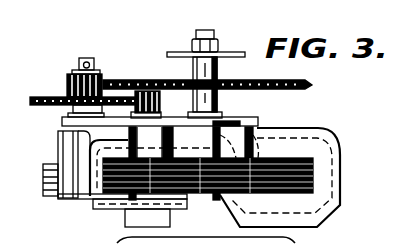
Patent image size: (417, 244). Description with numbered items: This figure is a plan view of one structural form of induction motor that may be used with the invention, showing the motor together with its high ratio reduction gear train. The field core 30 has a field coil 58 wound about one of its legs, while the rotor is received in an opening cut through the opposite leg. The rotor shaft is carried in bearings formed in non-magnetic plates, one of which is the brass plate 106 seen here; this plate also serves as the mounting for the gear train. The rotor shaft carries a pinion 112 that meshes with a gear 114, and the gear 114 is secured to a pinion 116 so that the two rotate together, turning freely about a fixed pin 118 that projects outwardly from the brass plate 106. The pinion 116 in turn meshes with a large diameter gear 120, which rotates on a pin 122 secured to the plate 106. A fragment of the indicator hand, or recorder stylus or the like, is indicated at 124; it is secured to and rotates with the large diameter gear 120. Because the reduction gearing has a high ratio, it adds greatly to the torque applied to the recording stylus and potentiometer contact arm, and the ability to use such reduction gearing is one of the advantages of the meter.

The field core 30 is at (312, 158).
The field coil 58 is at (322, 193).
The brass plate 106 is at (237, 116).
The pinion 112 is at (162, 97).
The gear 114 is at (50, 97).
The pinion 116 is at (65, 96).
The fixed pin 118 is at (94, 65).
The large diameter gear 120 is at (309, 87).
The pin 122 is at (205, 32).
The indicator hand 124 is at (226, 52).